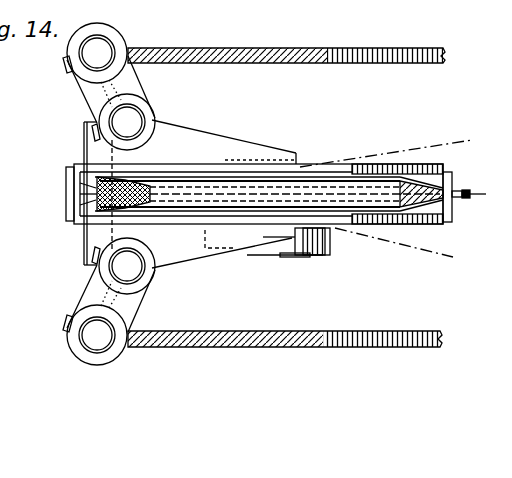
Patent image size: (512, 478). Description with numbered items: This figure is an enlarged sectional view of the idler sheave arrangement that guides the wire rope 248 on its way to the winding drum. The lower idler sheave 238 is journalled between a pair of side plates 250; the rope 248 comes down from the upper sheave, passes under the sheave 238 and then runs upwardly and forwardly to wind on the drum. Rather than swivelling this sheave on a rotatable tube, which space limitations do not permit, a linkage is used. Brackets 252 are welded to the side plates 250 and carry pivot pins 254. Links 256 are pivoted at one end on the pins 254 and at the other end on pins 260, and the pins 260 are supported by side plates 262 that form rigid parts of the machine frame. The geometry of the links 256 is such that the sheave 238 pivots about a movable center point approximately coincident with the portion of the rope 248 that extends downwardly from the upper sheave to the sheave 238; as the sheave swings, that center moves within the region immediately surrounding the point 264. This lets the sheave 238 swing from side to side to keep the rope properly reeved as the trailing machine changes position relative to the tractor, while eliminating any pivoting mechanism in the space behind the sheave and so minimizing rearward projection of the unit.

The idler sheave 238 is at (392, 223).
The wire rope 248 is at (95, 191).
The side plates 250 is at (374, 163).
The brackets 252 is at (194, 131).
The pivot pins 254 is at (130, 118).
The links 256 is at (88, 90).
The pins 260 is at (100, 51).
The side plates 262 is at (273, 63).
The point 264 is at (138, 197).